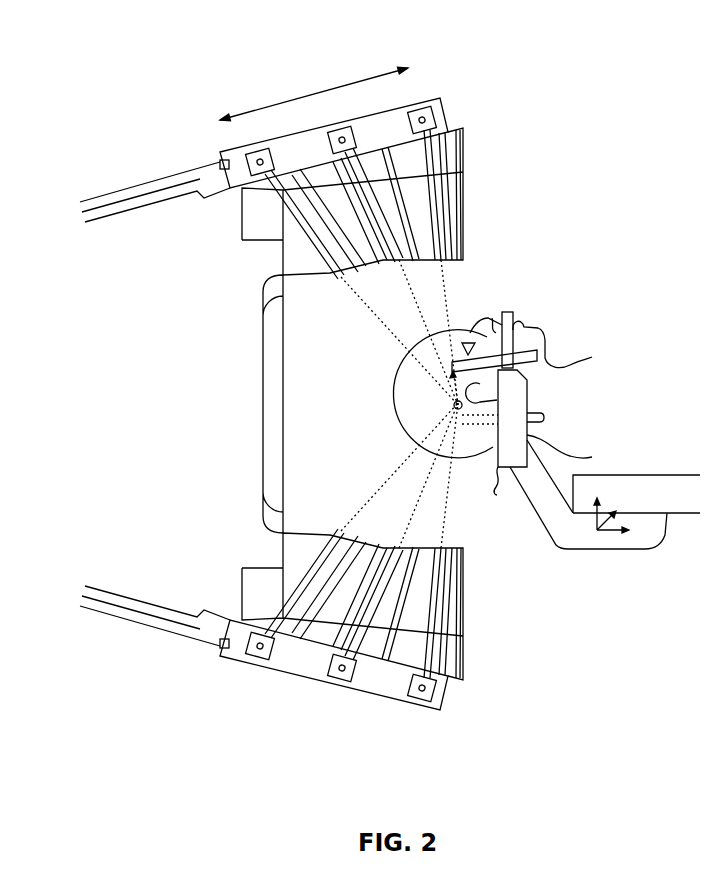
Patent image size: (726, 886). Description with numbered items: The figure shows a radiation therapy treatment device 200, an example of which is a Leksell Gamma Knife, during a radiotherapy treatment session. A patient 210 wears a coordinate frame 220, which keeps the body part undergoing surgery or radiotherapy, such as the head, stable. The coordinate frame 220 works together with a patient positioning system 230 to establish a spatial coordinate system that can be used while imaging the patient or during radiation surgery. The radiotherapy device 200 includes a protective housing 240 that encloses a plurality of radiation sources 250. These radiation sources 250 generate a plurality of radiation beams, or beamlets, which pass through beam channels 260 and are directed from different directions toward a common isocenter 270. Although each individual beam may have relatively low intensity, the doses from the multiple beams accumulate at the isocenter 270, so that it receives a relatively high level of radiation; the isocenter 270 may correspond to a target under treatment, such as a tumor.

The radiation therapy treatment device 200 is at (562, 49).
The patient 210 is at (548, 350).
The coordinate frame 220 is at (512, 472).
The patient positioning system 230 is at (648, 480).
The protective housing 240 is at (460, 160).
The radiation sources 250 is at (434, 117).
The beam channels 260 is at (452, 242).
The isocenter 270 is at (453, 404).